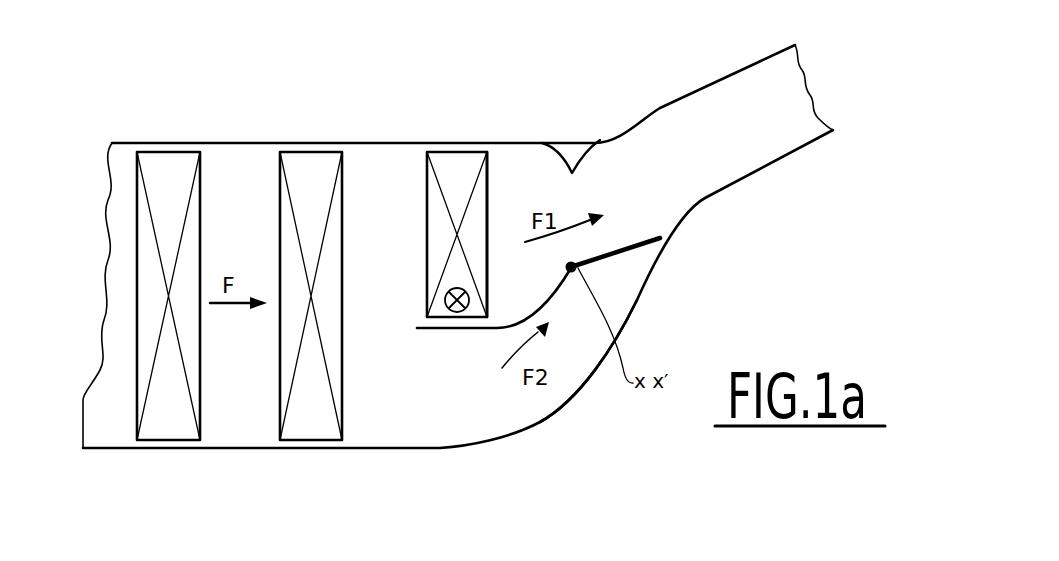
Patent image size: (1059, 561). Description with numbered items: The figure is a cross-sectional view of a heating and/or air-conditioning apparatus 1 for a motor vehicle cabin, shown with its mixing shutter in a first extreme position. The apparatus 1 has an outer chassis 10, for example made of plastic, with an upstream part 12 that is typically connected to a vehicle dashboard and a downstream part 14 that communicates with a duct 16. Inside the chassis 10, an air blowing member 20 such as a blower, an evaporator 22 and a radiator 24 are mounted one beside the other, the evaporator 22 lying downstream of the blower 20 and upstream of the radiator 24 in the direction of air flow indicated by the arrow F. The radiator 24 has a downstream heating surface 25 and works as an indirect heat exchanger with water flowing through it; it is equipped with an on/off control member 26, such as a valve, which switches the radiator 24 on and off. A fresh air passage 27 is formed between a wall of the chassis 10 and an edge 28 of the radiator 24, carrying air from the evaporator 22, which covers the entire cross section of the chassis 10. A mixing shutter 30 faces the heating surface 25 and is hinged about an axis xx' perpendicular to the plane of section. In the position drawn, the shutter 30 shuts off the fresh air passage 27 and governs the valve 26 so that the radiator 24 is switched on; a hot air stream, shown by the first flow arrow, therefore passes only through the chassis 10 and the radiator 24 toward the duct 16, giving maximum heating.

The heating and/or air-conditioning apparatus 1 is at (336, 120).
The outer chassis 10 is at (239, 140).
The upstream part 12 is at (125, 165).
The downstream part 14 is at (605, 148).
The duct 16 is at (760, 92).
The air blowing member 20 is at (163, 425).
The evaporator 22 is at (300, 418).
The radiator 24 is at (457, 165).
The downstream heating surface 25 is at (488, 188).
The control member 26 is at (457, 314).
The fresh air passage 27 is at (518, 400).
The edge of the radiator 28 is at (430, 330).
The mixing shutter 30 is at (622, 248).